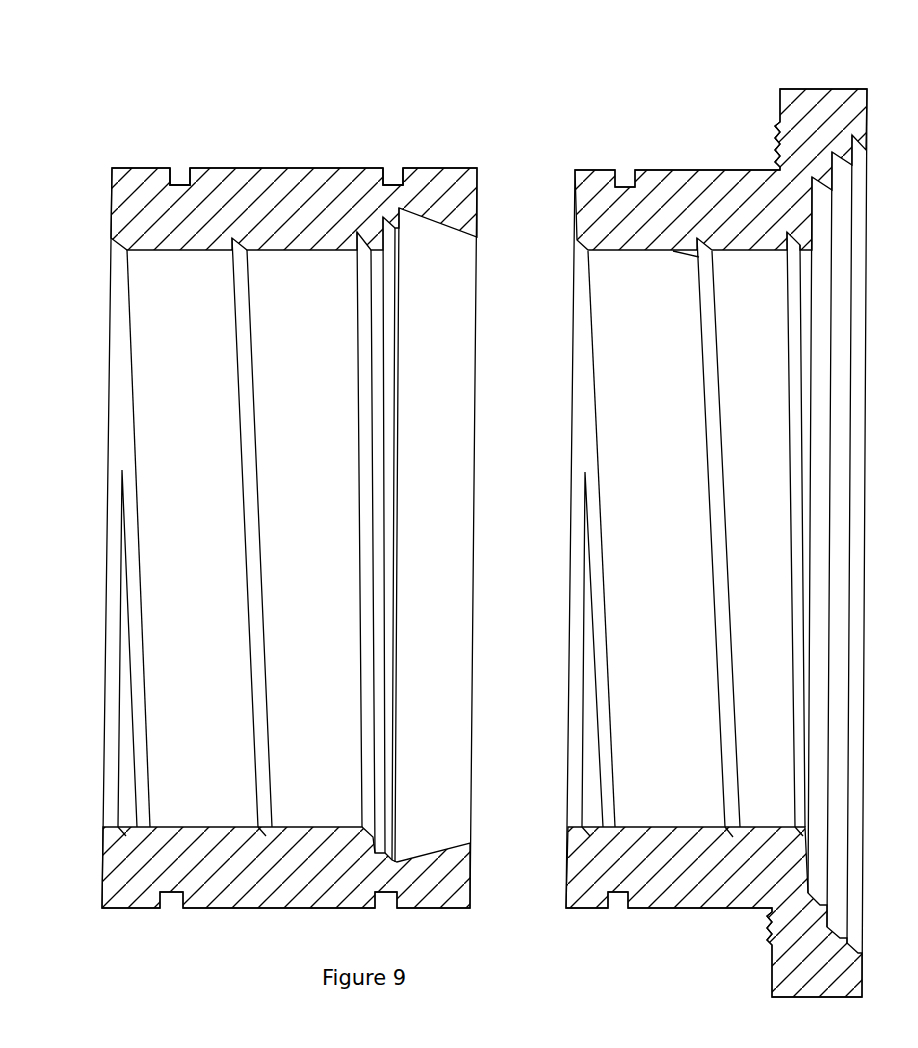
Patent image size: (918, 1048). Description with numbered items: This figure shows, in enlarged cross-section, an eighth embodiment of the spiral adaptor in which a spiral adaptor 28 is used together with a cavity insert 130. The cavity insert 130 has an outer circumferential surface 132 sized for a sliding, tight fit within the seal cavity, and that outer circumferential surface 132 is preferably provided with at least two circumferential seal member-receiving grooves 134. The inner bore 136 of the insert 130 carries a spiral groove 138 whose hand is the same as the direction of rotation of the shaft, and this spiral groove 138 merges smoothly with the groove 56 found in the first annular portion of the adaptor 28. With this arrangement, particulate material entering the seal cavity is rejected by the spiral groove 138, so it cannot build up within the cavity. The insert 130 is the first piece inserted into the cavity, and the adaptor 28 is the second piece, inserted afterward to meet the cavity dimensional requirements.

The spiral adaptor 28 is at (703, 118).
The groove 56 is at (708, 347).
The cavity insert 130 is at (370, 130).
The outer circumferential surface 132 is at (273, 170).
The circumferential seal member-receiving grooves 134 is at (183, 172).
The inner bore 136 is at (195, 827).
The spiral groove 138 is at (255, 605).